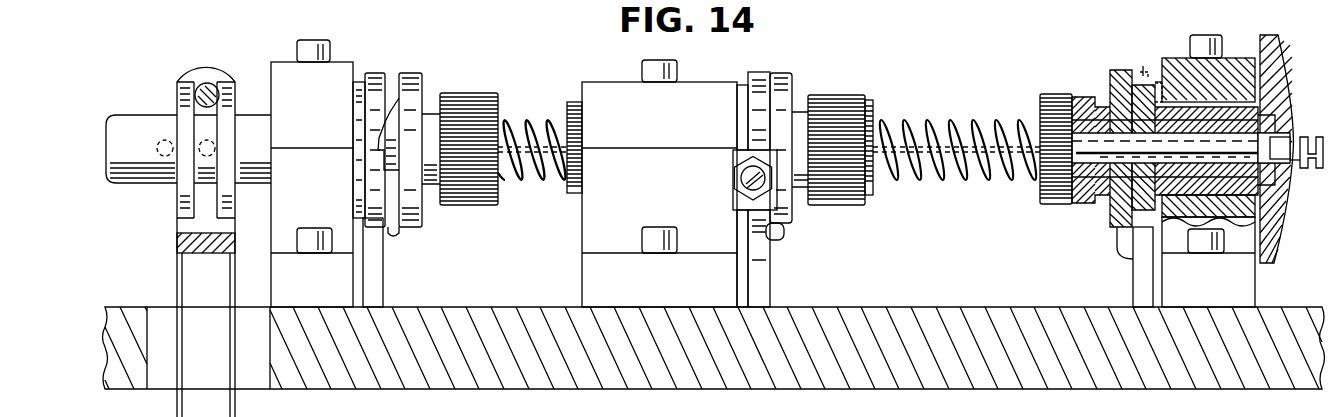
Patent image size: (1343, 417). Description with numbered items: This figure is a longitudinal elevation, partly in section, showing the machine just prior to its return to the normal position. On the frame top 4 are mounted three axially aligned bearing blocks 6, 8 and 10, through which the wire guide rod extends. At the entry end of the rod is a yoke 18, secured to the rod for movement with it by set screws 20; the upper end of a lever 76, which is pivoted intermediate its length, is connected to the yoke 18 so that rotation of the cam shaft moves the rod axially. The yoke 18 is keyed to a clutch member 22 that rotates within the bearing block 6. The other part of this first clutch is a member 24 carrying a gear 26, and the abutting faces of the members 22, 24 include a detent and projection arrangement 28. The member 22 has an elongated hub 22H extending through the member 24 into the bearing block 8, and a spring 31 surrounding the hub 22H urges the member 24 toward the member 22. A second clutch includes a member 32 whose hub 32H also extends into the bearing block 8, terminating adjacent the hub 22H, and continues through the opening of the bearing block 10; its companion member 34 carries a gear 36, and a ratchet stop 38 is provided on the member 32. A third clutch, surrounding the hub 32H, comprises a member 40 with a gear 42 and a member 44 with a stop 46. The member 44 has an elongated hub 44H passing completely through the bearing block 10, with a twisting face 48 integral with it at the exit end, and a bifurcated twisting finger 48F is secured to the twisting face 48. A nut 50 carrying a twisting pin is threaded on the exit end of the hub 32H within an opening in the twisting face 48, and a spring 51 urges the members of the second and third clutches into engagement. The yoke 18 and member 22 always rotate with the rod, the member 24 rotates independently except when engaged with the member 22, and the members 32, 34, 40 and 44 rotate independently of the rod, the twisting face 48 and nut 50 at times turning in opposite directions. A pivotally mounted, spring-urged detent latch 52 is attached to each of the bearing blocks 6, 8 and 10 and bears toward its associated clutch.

The top 4 is at (483, 307).
The bearing block 6 is at (285, 62).
The bearing block 8 is at (616, 85).
The bearing block 10 is at (1175, 58).
The yoke 18 is at (160, 122).
The set screws 20 is at (200, 152).
The clutch member 22 is at (374, 73).
The elongated hub 22H is at (555, 128).
The member 24 is at (415, 73).
The gear 26 is at (473, 95).
The detent and projection arrangement 28 is at (385, 128).
The spring 31 is at (528, 181).
The member 32 is at (755, 108).
The hub 32H is at (953, 128).
The member 34 is at (790, 75).
The gear 36 is at (838, 97).
The ratchet stop 38 is at (762, 78).
The member 40 is at (1115, 75).
The gear 42 is at (1058, 95).
The member 44 is at (1130, 225).
The elongated hub 44H is at (1173, 183).
The stop 46 is at (1143, 68).
The twisting face 48 is at (1283, 76).
The bifurcated twisting finger 48F is at (1310, 140).
The nut 50 is at (1293, 178).
The spring 51 is at (942, 175).
The detent latch 52 is at (378, 280).
The lever 76 is at (183, 291).